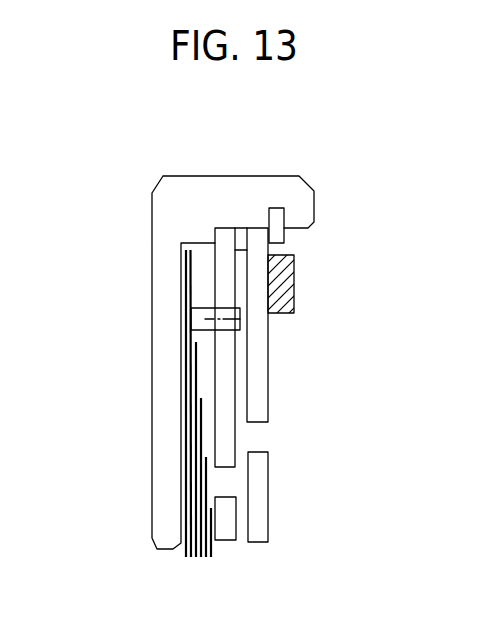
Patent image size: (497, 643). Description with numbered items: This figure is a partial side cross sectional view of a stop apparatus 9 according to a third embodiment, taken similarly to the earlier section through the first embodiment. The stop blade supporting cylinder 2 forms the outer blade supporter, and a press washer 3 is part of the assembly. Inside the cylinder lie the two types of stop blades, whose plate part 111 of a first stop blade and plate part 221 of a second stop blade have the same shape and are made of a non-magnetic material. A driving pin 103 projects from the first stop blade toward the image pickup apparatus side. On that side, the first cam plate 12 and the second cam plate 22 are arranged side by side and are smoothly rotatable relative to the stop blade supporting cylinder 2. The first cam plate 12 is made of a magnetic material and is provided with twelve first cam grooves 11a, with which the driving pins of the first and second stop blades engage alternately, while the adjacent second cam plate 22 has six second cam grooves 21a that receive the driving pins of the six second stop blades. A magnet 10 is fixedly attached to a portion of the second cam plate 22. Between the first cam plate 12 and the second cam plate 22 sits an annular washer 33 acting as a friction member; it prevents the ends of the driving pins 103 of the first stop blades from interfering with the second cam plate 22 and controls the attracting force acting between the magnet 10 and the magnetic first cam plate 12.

The stop apparatus 9 is at (118, 166).
The stop blade supporting cylinder 2 is at (165, 242).
The plate part 111 is at (197, 252).
The annular washer 33 is at (242, 240).
The second cam groove 21a is at (258, 435).
The press washer 3 is at (277, 218).
The magnet 10 is at (280, 277).
The plate part 221 is at (192, 314).
The driving pin 103 is at (223, 323).
The first cam groove 11a is at (227, 483).
The first cam plate 12 is at (225, 527).
The second cam plate 22 is at (253, 527).